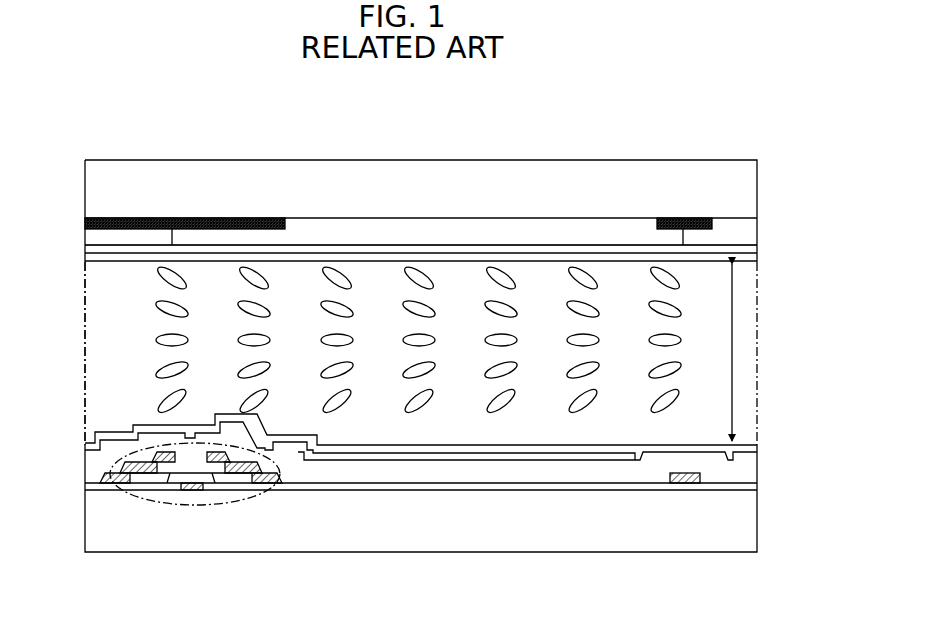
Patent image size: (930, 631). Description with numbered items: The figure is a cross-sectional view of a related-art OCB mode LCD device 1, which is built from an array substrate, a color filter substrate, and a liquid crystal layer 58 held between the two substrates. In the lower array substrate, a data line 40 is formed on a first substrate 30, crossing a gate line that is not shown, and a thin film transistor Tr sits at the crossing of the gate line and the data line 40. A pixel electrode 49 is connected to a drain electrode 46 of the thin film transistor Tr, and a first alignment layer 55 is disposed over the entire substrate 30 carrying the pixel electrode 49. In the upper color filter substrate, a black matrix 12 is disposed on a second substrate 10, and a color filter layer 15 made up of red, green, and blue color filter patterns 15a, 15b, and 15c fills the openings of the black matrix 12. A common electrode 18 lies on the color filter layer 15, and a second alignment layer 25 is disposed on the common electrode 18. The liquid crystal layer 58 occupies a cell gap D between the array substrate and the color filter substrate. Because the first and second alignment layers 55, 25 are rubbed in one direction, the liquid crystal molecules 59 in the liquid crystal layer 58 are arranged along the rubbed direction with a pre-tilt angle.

The OCB mode LCD device 1 is at (749, 130).
The second substrate 10 is at (684, 196).
The black matrix 12 is at (243, 222).
The color filter layer 15 is at (152, 120).
The red color filter pattern 15a is at (410, 225).
The green color filter pattern 15b is at (737, 223).
The blue color filter pattern 15c is at (155, 233).
The common electrode 18 is at (535, 248).
The second alignment layer 25 is at (592, 260).
The first substrate 30 is at (724, 530).
The data line 40 is at (680, 484).
The drain electrode 46 is at (225, 462).
The pixel electrode 49 is at (383, 460).
The first alignment layer 55 is at (487, 452).
The liquid crystal layer 58 is at (95, 357).
The liquid crystal molecules 59 is at (165, 308).
The cell gap D is at (725, 352).
The thin film transistor Tr is at (160, 499).